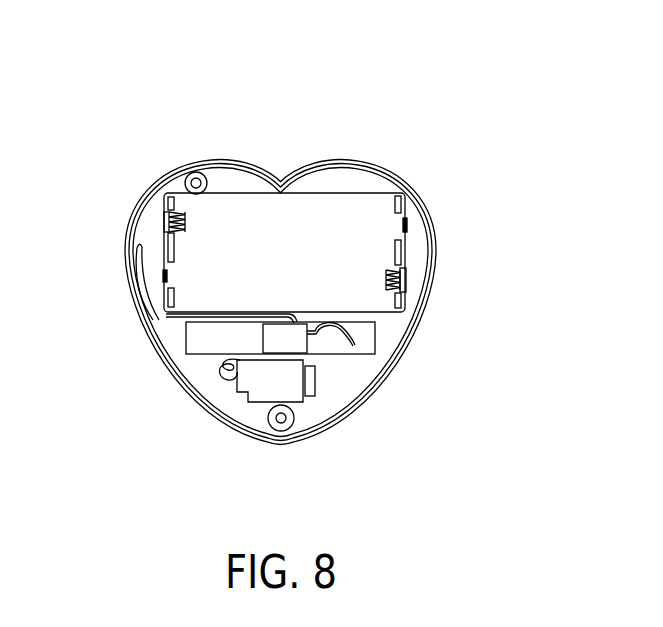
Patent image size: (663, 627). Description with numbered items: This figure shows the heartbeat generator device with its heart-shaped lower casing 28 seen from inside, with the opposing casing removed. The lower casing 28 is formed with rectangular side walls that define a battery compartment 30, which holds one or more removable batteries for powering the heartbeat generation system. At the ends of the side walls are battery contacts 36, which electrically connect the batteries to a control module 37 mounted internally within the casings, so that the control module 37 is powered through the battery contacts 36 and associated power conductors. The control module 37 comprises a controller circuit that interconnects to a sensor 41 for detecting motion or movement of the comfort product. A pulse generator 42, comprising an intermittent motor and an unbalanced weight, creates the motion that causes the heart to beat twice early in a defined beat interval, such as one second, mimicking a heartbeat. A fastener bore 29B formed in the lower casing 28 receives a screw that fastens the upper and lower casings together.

The lower casing 28 is at (386, 166).
The battery compartment 30 is at (320, 220).
The battery contacts 36 is at (166, 222).
The sensor 41 is at (268, 338).
The control module 37 is at (230, 392).
The pulse generator 42 is at (292, 392).
The fastener bore 29B is at (303, 427).